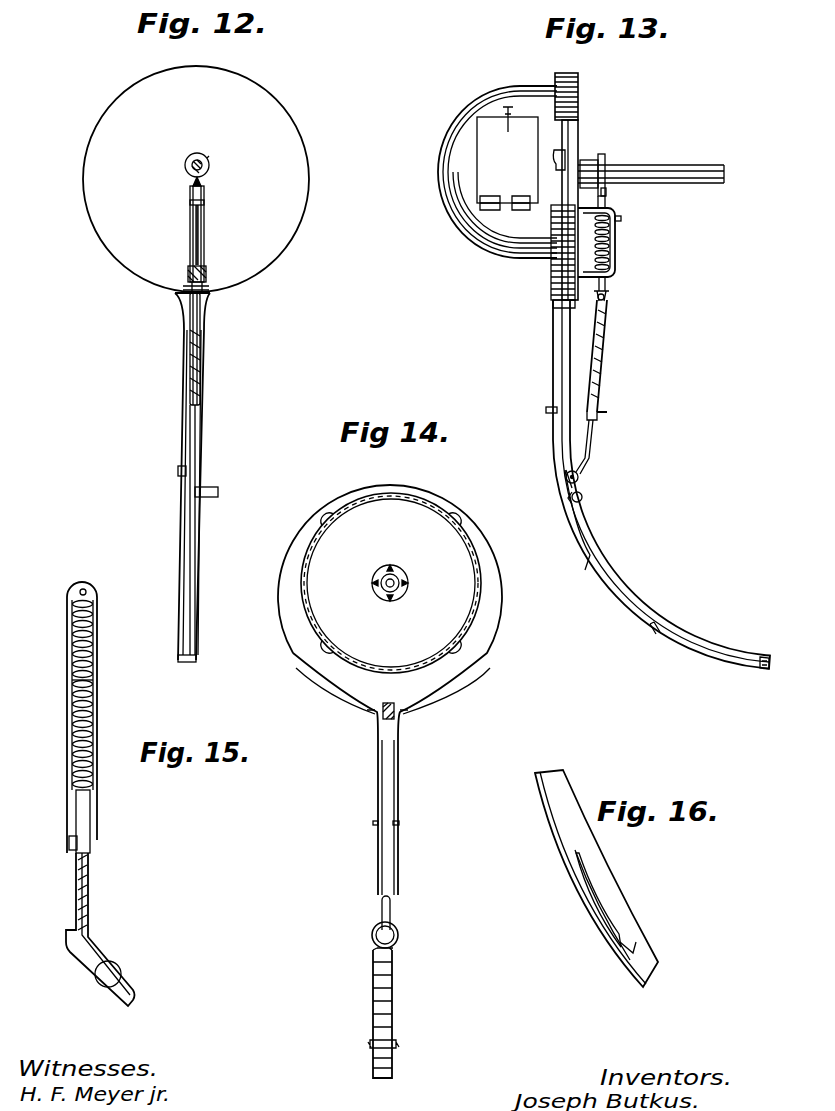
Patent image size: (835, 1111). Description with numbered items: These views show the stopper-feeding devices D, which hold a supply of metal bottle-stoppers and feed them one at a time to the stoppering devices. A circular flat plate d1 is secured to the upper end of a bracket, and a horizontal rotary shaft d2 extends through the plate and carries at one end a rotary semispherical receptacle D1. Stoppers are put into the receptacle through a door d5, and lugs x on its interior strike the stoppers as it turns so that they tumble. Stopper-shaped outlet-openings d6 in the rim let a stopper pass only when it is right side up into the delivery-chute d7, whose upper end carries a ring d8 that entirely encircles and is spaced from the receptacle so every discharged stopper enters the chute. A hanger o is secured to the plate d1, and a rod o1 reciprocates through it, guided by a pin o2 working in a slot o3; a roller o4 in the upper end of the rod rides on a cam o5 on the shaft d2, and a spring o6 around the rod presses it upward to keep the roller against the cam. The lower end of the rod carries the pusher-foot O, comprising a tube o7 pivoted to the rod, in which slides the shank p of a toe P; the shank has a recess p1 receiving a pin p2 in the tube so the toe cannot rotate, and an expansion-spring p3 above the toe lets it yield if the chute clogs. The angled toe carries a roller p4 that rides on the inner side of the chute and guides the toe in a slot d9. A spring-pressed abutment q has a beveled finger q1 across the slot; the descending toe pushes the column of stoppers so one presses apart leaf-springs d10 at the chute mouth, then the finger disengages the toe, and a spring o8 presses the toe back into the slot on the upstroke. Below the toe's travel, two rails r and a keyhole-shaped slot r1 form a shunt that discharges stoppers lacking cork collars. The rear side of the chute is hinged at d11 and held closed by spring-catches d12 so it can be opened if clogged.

In FIG. 12, the circular flat plate d1 is at (196, 179).
In FIG. 13, the circular flat plate d1 is at (579, 133).
In FIG. 14, the circular flat plate d1 is at (492, 656).
In FIG. 12, the horizontal rotary shaft d2 is at (190, 160).
In FIG. 13, the horizontal rotary shaft d2 is at (690, 168).
In FIG. 13, the door d5 is at (507, 158).
In FIG. 13, the outlet-openings d6 is at (572, 158).
In FIG. 12, the delivery-chute d7 is at (203, 433).
In FIG. 13, the delivery-chute d7 is at (612, 578).
In FIG. 14, the delivery-chute d7 is at (399, 855).
In FIG. 16, the delivery-chute d7 is at (616, 900).
In FIG. 13, the ring d8 is at (565, 263).
In FIG. 14, the ring d8 is at (497, 594).
In FIG. 12, the slot d9 is at (190, 568).
In FIG. 12, the leaf-springs d10 is at (183, 662).
In FIG. 13, the leaf-springs d10 is at (763, 672).
In FIG. 13, the hinge d11 is at (556, 302).
In FIG. 14, the hinge d11 is at (382, 719).
In FIG. 13, the spring-catches d12 is at (549, 413).
In FIG. 14, the spring-catches d12 is at (399, 823).
In FIG. 12, the stopper-feeding devices D is at (219, 300).
In FIG. 13, the stopper-feeding devices D is at (525, 296).
In FIG. 14, the stopper-feeding devices D is at (365, 731).
In FIG. 13, the rotary semispherical receptacle D1 is at (462, 122).
In FIG. 14, the rotary semispherical receptacle D1 is at (308, 552).
In FIG. 12, the hanger o is at (199, 228).
In FIG. 13, the hanger o is at (616, 240).
In FIG. 12, the rod o1 is at (205, 191).
In FIG. 13, the rod o1 is at (610, 207).
In FIG. 12, the pin o2 is at (205, 205).
In FIG. 13, the pin o2 is at (621, 218).
In FIG. 12, the slot o3 is at (199, 250).
In FIG. 12, the roller o4 is at (192, 184).
In FIG. 13, the roller o4 is at (607, 192).
In FIG. 12, the cam o5 is at (207, 157).
In FIG. 13, the cam o5 is at (606, 170).
In FIG. 13, the spring o6 is at (610, 259).
In FIG. 12, the tube o7 is at (201, 372).
In FIG. 15, the tube o7 is at (95, 660).
In FIG. 13, the tube o7 is at (600, 352).
In FIG. 12, the spring o8 is at (190, 308).
In FIG. 13, the spring o8 is at (608, 316).
In FIG. 12, the pusher-foot O is at (201, 348).
In FIG. 15, the pusher-foot O is at (98, 717).
In FIG. 13, the pusher-foot O is at (619, 363).
In FIG. 15, the shank p is at (88, 818).
In FIG. 13, the shank p is at (590, 440).
In FIG. 15, the recess p1 is at (76, 890).
In FIG. 15, the pin p2 is at (74, 852).
In FIG. 13, the pin p2 is at (598, 428).
In FIG. 15, the expansion-spring p3 is at (72, 690).
In FIG. 15, the roller p4 is at (119, 968).
In FIG. 13, the roller p4 is at (579, 478).
In FIG. 15, the toe P is at (114, 915).
In FIG. 13, the toe P is at (602, 455).
In FIG. 12, the spring-pressed abutment q is at (218, 490).
In FIG. 13, the spring-pressed abutment q is at (583, 497).
In FIG. 12, the finger q1 is at (193, 490).
In FIG. 13, the rails r is at (571, 516).
In FIG. 16, the rails r is at (585, 875).
In FIG. 13, the keyhole-shaped slot r1 is at (566, 494).
In FIG. 14, the keyhole-shaped slot r1 is at (389, 920).
In FIG. 16, the keyhole-shaped slot r1 is at (566, 852).
In FIG. 14, the lugs x is at (335, 527).